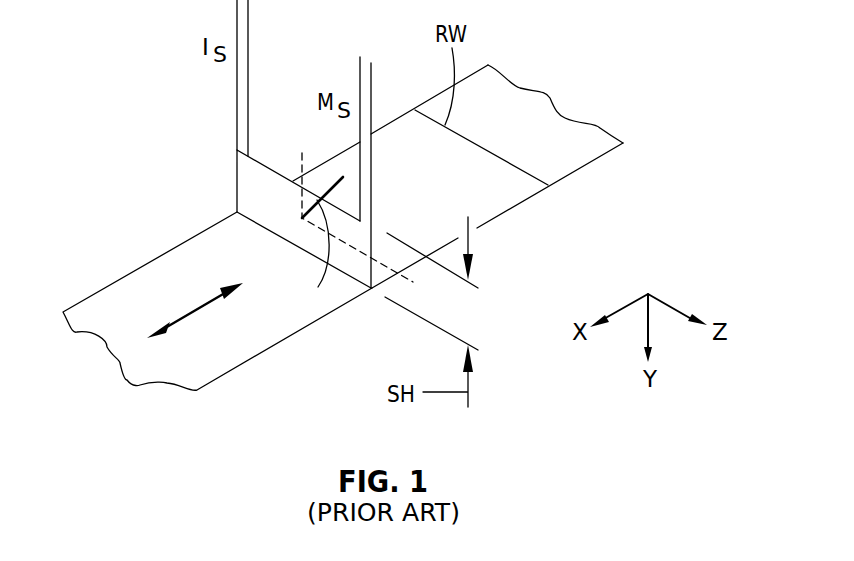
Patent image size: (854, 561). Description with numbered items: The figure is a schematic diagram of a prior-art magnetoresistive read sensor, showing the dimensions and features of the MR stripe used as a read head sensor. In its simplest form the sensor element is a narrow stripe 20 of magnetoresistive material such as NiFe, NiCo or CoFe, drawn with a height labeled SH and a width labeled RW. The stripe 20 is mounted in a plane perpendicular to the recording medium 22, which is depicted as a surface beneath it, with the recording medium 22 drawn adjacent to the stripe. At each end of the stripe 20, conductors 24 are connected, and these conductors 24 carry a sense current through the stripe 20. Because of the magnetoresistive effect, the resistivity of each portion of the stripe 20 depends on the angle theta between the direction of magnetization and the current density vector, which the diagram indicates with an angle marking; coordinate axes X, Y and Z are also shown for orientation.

The stripe 20 is at (247, 182).
The recording medium 22 is at (203, 302).
The conductors 24 is at (248, 6).